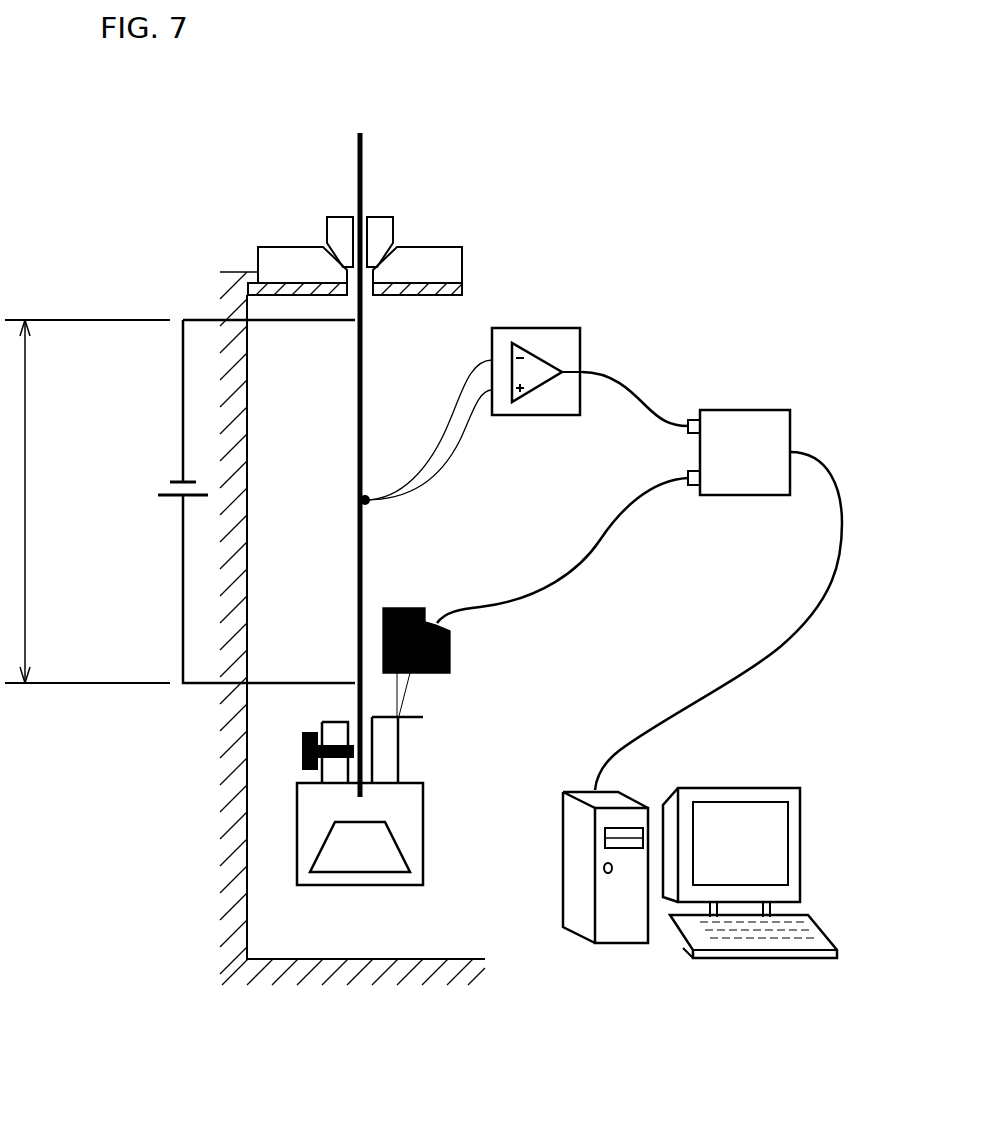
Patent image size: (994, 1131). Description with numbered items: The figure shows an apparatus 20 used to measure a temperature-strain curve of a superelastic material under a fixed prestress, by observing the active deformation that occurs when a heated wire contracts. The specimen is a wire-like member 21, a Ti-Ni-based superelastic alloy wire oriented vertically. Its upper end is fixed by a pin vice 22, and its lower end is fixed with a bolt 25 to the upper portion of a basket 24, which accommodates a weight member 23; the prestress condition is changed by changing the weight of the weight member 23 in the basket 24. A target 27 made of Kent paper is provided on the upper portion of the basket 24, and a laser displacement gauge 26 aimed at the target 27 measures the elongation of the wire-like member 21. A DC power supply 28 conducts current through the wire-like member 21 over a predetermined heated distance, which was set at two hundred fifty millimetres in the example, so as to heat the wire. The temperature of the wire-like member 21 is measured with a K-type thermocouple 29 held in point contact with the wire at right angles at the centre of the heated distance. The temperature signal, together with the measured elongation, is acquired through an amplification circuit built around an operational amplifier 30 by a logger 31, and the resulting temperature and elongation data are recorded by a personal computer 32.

The apparatus 20 is at (637, 242).
The wire-like member 21 is at (452, 465).
The pin vice 22 is at (317, 252).
The weight member 23 is at (418, 851).
The basket 24 is at (442, 751).
The bolt 25 is at (304, 729).
The laser displacement gauge 26 is at (555, 662).
The target 27 is at (462, 716).
The DC power supply 28 is at (180, 501).
The thermocouple 29 is at (471, 449).
The operational amplifier 30 is at (581, 341).
The logger 31 is at (639, 580).
The personal computer 32 is at (757, 788).